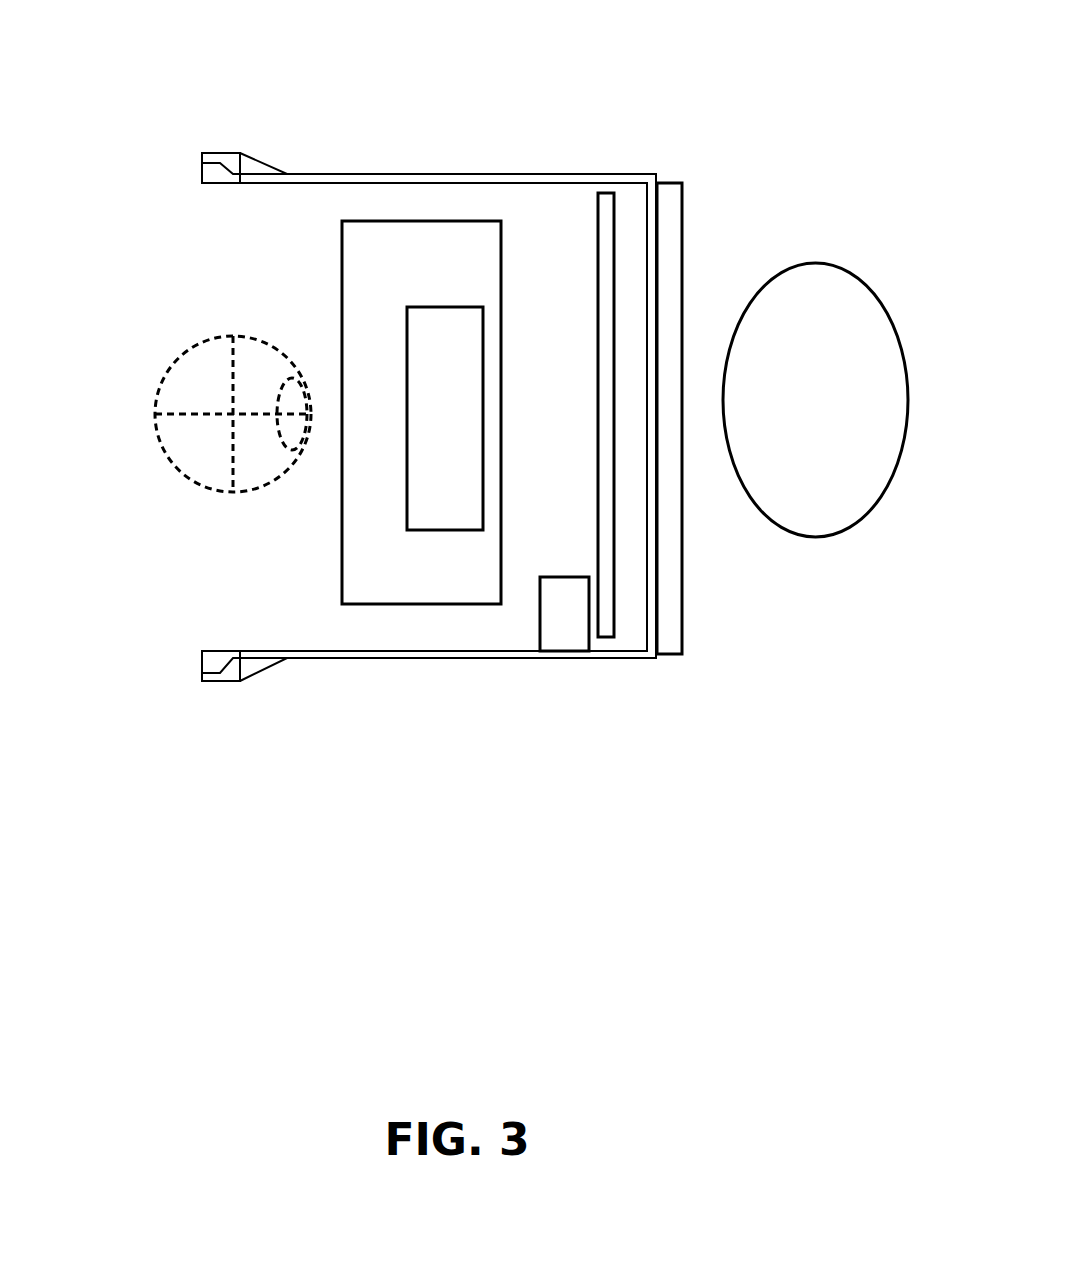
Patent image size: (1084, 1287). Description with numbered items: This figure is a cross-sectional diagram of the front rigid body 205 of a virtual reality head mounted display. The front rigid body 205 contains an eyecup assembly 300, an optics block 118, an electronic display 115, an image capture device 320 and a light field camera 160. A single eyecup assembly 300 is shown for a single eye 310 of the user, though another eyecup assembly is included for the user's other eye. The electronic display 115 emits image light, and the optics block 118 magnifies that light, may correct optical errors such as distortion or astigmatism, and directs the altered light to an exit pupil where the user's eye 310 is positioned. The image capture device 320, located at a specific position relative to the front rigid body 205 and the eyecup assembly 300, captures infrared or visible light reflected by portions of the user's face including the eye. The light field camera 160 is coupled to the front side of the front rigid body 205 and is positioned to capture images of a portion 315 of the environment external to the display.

The eyecup assembly 300 is at (410, 255).
The optics block 118 is at (450, 343).
The front rigid body 205 is at (520, 173).
The portion of an environment 315 is at (815, 262).
The eye 310 is at (190, 352).
The image capture device 320 is at (563, 655).
The electronic display 115 is at (608, 640).
The light field camera 160 is at (668, 617).